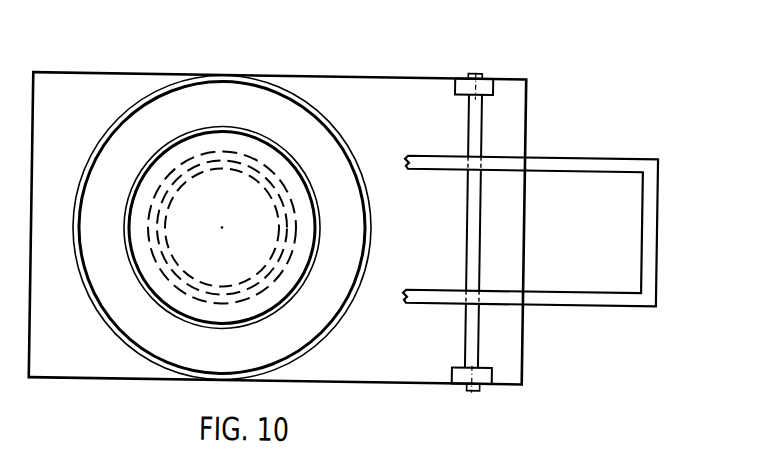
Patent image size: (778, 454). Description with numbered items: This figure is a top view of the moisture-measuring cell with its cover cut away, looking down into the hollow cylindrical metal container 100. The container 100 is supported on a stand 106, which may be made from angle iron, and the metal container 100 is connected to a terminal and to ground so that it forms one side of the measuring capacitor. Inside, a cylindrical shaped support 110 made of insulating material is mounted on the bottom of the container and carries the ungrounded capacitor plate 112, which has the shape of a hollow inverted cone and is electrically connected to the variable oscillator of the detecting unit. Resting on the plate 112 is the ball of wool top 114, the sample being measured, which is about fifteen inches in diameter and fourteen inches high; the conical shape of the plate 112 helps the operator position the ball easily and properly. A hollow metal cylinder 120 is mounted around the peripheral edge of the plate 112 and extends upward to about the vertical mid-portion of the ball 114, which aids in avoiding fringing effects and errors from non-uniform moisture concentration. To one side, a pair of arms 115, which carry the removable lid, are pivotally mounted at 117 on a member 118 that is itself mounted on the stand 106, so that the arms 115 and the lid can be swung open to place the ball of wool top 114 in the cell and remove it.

The hollow cylindrical metal container 100 is at (295, 94).
The stand 106 is at (393, 368).
The cylindrical shaped support 110 is at (293, 199).
The ungrounded capacitor plate 112 is at (293, 272).
The ball of wool top 114 is at (292, 246).
The arms 115 is at (551, 158).
The pivot 117 is at (476, 121).
The member 118 is at (483, 81).
The hollow metal cylinder 120 is at (164, 146).